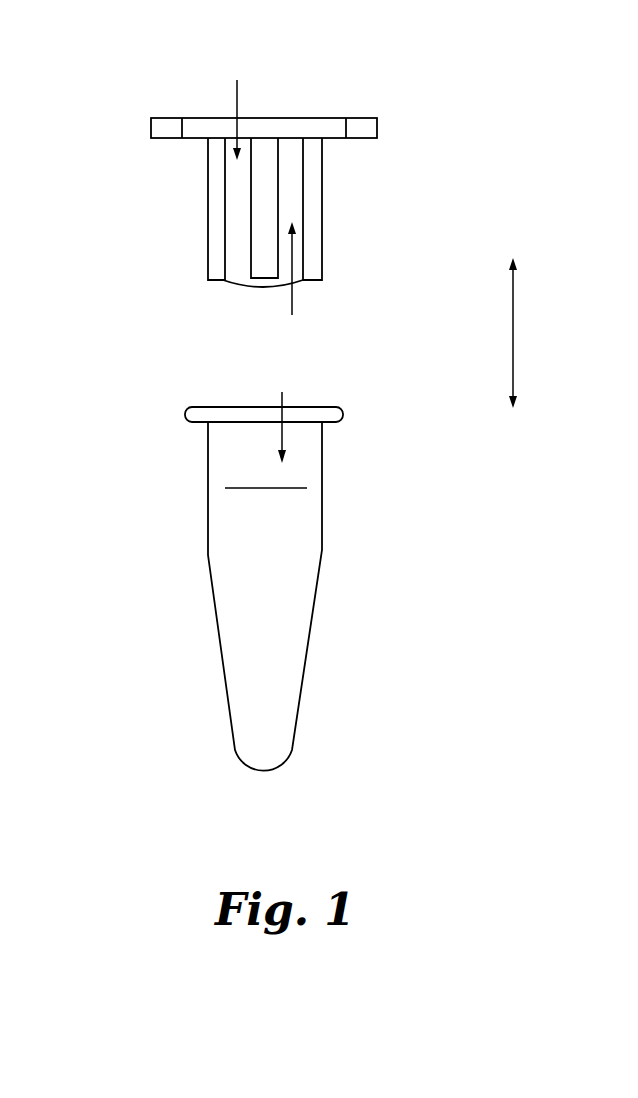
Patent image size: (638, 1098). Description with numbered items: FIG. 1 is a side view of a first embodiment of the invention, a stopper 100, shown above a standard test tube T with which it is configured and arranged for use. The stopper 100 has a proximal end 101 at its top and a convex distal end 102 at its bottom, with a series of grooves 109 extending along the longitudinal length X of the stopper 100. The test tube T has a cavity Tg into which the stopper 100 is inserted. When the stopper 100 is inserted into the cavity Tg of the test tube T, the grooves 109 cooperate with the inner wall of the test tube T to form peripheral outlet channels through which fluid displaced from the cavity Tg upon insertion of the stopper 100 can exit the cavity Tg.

The stopper 100 is at (228, 181).
The proximal end 101 is at (322, 140).
The convex distal end 102 is at (252, 288).
The grooves 109 is at (237, 80).
The test tube T is at (208, 522).
The cavity Tg is at (282, 392).
The longitudinal length X is at (513, 320).